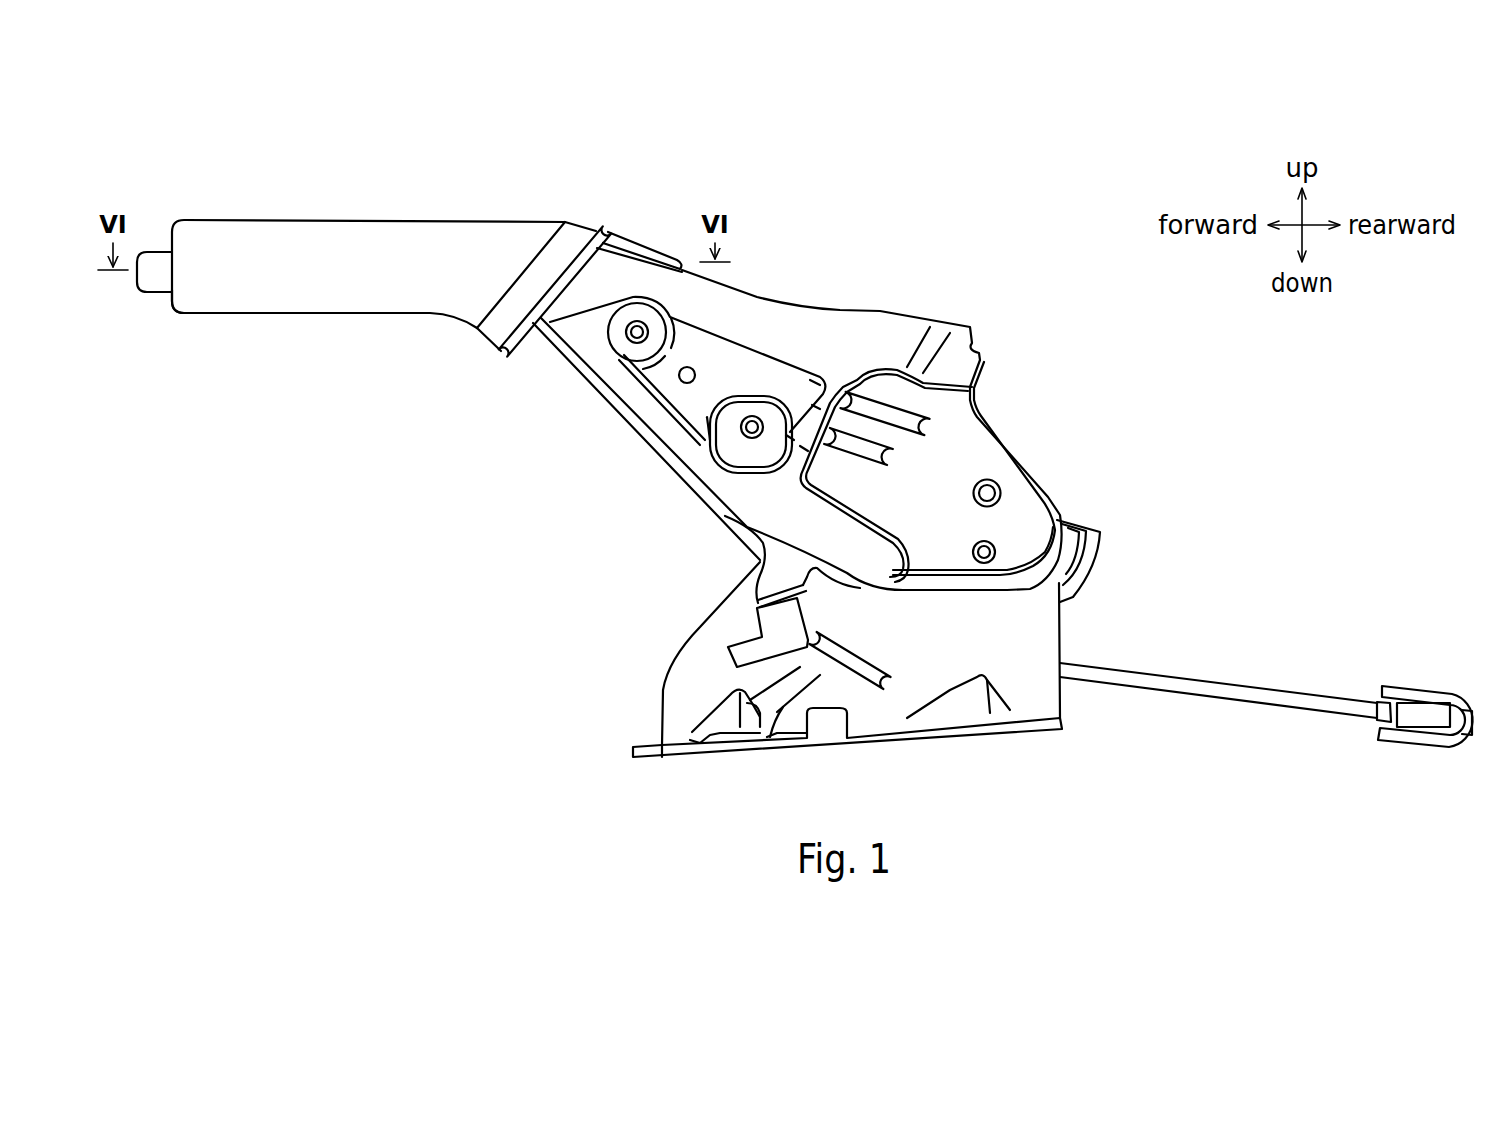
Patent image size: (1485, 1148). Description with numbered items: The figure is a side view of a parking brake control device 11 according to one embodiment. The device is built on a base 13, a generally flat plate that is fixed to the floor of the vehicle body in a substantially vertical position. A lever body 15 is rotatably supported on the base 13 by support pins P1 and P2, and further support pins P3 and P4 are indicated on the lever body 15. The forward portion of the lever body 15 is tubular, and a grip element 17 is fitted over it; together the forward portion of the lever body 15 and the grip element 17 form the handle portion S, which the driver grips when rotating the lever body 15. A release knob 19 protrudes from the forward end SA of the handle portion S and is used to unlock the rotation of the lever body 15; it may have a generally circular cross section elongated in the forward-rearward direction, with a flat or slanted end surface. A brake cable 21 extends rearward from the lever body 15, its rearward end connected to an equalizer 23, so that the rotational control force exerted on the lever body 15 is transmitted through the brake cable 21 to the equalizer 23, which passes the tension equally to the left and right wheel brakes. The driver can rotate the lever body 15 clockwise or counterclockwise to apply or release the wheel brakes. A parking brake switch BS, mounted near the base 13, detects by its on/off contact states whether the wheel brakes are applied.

The parking brake control device 11 is at (974, 198).
The base 13 is at (1023, 677).
The lever body 15 is at (880, 337).
The grip element 17 is at (333, 240).
The release knob 19 is at (161, 247).
The brake cable 21 is at (1252, 693).
The equalizer 23 is at (1412, 677).
The handle portion S is at (467, 206).
The forward end of the handle portion SA is at (170, 302).
The parking brake switch BS is at (783, 627).
The support pin P1 is at (988, 493).
The support pin P2 is at (997, 550).
The support pin P3 is at (752, 427).
The support pin P4 is at (635, 335).